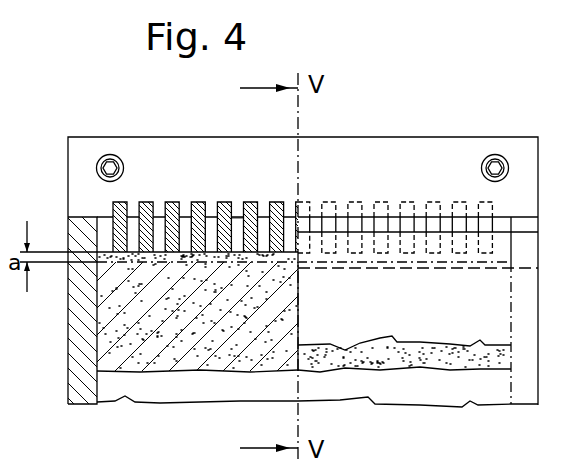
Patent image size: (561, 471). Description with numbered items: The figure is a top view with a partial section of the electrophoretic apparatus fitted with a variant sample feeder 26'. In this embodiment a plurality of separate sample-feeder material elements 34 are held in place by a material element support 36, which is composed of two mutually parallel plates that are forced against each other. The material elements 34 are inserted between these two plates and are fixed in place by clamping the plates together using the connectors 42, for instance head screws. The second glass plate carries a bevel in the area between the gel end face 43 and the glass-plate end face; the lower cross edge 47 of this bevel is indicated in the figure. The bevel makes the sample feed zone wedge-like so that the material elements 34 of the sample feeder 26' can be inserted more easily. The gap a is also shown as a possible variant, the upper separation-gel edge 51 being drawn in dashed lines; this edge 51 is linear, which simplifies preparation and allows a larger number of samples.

The sample feeder 26' is at (275, 244).
The sample-feeder material element 34 is at (113, 205).
The material element support 36 is at (406, 125).
The connector 42 is at (115, 155).
The gel end face 43 is at (236, 248).
The lower cross edge of the bevel 47 is at (378, 271).
The upper separation-gel edge 51 is at (128, 262).